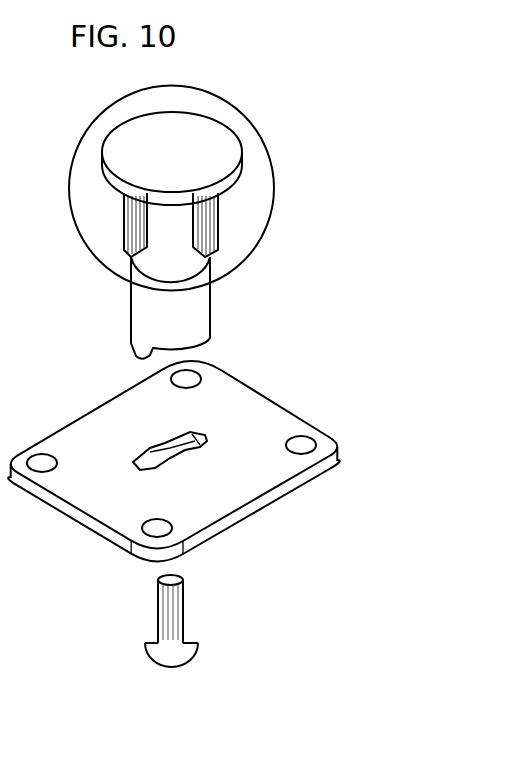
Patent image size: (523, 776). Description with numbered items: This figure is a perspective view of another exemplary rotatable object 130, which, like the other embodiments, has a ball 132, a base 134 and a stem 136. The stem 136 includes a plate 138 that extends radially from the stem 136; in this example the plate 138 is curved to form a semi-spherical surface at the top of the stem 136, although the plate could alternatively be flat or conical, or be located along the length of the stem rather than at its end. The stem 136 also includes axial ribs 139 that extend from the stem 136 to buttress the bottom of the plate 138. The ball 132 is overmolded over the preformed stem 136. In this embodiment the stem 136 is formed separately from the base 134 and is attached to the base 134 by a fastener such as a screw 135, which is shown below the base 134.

The rotatable object 130 is at (228, 201).
The ball 132 is at (257, 212).
The base 134 is at (240, 478).
The screw 135 is at (185, 615).
The stem 136 is at (213, 338).
The plate 138 is at (237, 177).
The axial ribs 139 is at (220, 240).